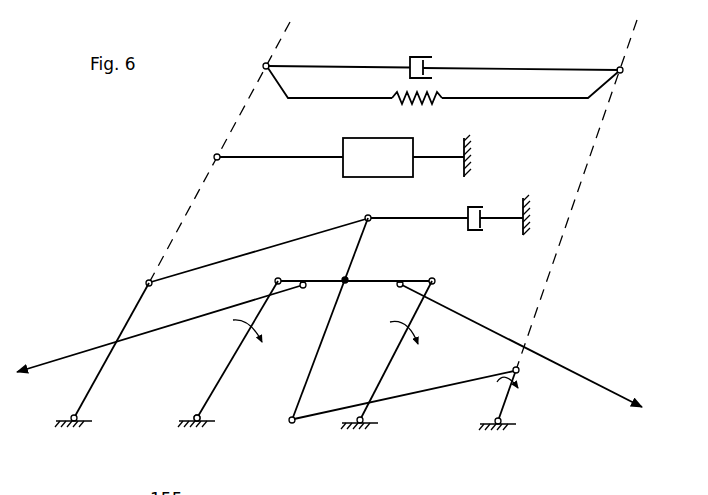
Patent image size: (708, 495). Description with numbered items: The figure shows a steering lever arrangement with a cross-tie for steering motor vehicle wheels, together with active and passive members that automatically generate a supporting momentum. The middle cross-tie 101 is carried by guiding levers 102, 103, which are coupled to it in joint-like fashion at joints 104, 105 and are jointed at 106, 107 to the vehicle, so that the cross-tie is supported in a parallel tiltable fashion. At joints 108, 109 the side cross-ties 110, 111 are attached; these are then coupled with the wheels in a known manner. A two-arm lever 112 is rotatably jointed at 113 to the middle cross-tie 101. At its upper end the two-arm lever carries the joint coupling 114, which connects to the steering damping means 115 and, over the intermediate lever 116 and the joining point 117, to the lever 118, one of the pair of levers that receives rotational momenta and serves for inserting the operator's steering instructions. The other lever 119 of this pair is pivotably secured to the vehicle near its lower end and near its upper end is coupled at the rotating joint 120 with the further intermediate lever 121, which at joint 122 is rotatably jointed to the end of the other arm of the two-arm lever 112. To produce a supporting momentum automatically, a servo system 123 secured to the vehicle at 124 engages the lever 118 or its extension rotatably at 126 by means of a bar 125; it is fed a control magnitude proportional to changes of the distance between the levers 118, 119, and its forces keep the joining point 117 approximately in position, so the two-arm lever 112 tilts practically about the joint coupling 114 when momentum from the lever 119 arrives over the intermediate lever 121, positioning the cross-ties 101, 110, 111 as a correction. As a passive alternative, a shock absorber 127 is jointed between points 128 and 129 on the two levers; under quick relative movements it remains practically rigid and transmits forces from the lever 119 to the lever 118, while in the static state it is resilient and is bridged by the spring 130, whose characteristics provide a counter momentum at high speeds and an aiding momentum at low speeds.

The middle cross-tie 101 is at (418, 280).
The guiding lever 102 is at (238, 365).
The guiding lever 103 is at (393, 360).
The joint 104 is at (280, 278).
The joint 105 is at (436, 281).
The joint 106 is at (200, 428).
The joint 107 is at (360, 428).
The joint 108 is at (303, 289).
The joint 109 is at (397, 288).
The side cross-tie 110 is at (195, 330).
The side cross-tie 111 is at (568, 368).
The two-arm lever 112 is at (313, 362).
The joint 113 is at (352, 276).
The joint coupling 114 is at (365, 216).
The steering damping means 115 is at (478, 229).
The intermediate lever 116 is at (231, 257).
The joining point 117 is at (147, 280).
The lever 118 is at (105, 361).
The lever 119 is at (508, 400).
The rotating joint 120 is at (522, 370).
The intermediate lever 121 is at (428, 392).
The joint 122 is at (292, 428).
The servo system 123 is at (363, 150).
The securing point 124 is at (468, 155).
The bar 125 is at (272, 153).
The joint 126 is at (215, 154).
The shock absorber 127 is at (413, 61).
The point 128 is at (264, 64).
The point 129 is at (623, 70).
The spring 130 is at (433, 95).